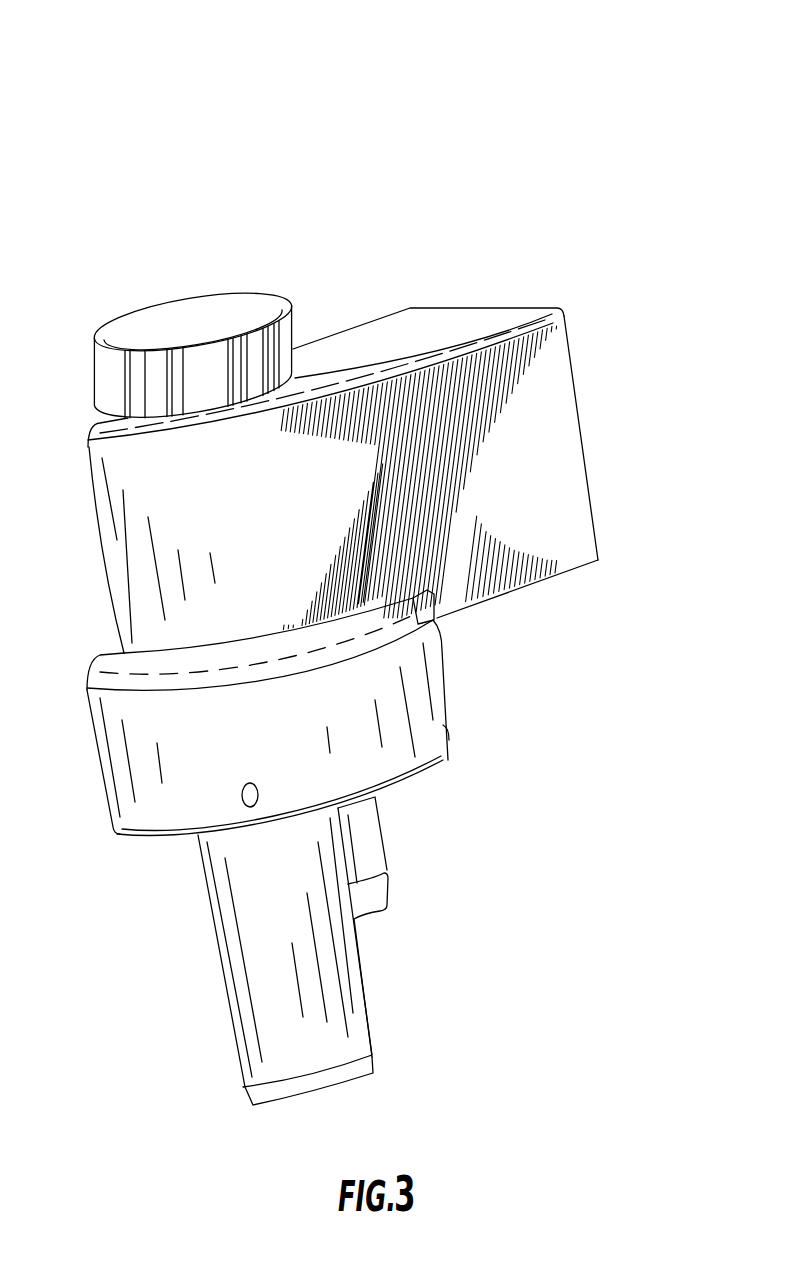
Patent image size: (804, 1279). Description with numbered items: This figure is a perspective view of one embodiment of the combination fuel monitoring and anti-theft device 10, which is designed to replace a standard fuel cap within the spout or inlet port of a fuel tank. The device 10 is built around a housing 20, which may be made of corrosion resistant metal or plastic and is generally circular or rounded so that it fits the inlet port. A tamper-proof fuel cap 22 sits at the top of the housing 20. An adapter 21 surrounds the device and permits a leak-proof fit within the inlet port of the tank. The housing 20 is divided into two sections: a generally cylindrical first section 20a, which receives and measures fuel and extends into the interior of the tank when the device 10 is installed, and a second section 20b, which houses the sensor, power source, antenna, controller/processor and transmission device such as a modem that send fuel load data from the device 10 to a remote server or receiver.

The combination fuel monitoring and anti-theft device 10 is at (584, 169).
The housing 20 is at (585, 307).
The first section 20a is at (367, 967).
The second section 20b is at (588, 477).
The adapter 21 is at (445, 702).
The tamper-proof fuel cap 22 is at (195, 322).